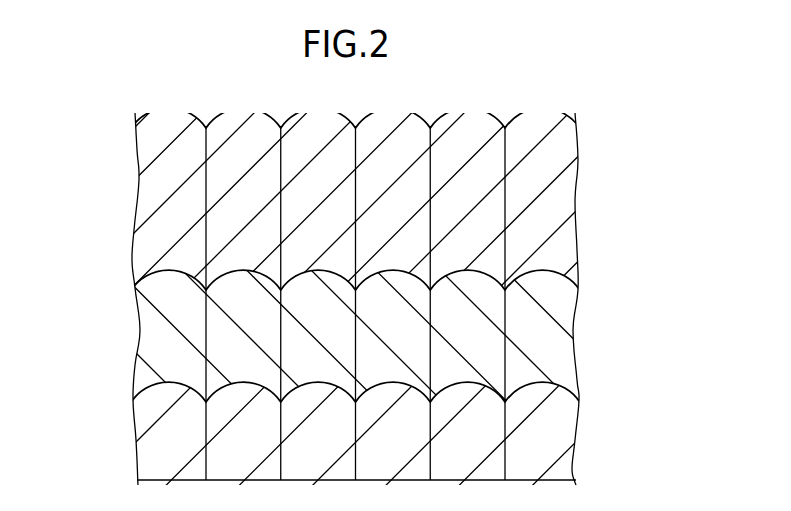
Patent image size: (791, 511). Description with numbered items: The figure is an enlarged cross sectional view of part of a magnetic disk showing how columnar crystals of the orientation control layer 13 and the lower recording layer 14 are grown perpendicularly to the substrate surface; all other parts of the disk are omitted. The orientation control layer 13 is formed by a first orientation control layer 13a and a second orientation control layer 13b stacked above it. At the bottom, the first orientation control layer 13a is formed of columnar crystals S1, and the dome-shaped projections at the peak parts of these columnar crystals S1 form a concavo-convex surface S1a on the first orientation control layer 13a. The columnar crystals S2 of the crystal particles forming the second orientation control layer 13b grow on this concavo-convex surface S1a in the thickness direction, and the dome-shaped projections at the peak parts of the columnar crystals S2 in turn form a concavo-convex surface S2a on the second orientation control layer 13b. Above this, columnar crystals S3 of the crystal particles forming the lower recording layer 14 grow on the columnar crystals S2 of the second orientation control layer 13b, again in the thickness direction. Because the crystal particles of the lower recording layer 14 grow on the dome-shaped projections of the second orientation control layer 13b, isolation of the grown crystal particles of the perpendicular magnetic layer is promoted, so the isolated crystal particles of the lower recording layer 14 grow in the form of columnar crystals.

The lower recording layer 14 is at (370, 200).
The orientation control layer 13 is at (376, 366).
The first orientation control layer 13a is at (356, 423).
The second orientation control layer 13b is at (376, 331).
The columnar crystals S1 is at (223, 437).
The concavo-convex surface S1a is at (243, 381).
The columnar crystals S2 is at (223, 328).
The concavo-convex surface S2a is at (243, 268).
The columnar crystals S3 is at (223, 186).